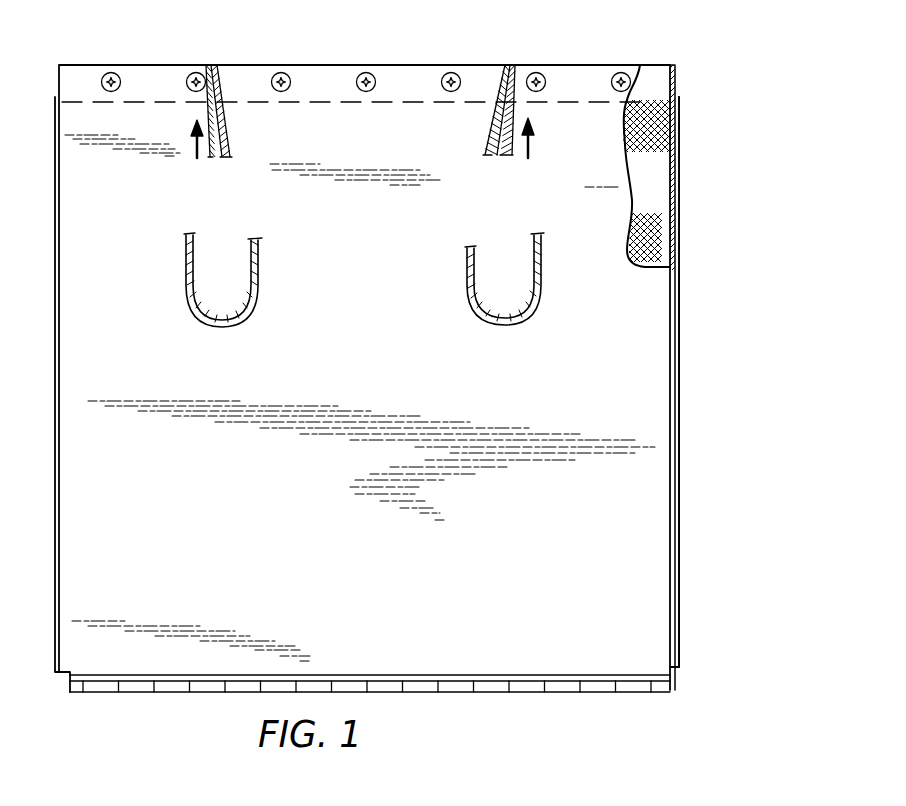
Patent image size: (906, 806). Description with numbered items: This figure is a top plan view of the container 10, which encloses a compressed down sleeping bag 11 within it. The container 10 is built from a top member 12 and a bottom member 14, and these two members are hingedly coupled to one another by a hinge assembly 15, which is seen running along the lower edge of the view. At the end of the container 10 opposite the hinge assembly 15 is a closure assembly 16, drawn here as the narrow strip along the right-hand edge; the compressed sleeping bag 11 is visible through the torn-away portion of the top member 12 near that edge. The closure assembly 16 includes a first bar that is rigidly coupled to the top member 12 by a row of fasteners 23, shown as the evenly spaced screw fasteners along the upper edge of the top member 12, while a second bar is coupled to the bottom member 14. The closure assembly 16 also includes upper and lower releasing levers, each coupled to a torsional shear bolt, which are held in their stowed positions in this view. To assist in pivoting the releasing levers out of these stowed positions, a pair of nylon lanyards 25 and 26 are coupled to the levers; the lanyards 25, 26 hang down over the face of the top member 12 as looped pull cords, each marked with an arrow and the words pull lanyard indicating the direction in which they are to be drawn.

The container 10 is at (697, 113).
The compressed down sleeping bag 11 is at (645, 173).
The top member 12 is at (641, 498).
The bottom member 14 is at (678, 544).
The hinge assembly 15 is at (607, 690).
The closure assembly 16 is at (654, 64).
The fasteners 23 is at (449, 92).
The nylon lanyard 25 is at (243, 318).
The nylon lanyard 26 is at (522, 318).